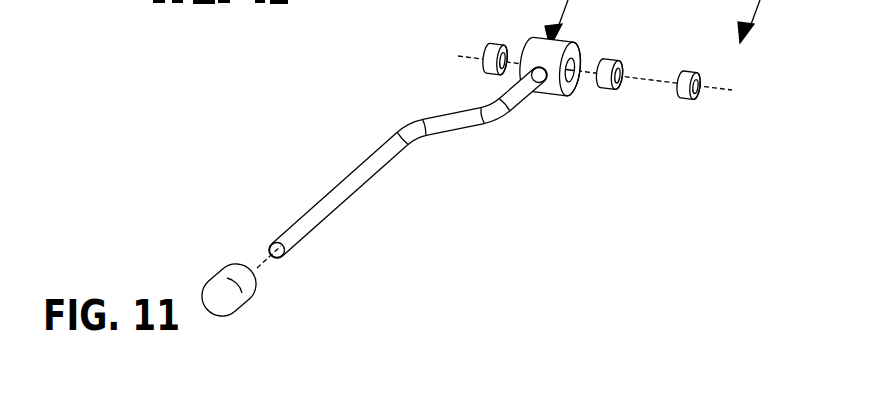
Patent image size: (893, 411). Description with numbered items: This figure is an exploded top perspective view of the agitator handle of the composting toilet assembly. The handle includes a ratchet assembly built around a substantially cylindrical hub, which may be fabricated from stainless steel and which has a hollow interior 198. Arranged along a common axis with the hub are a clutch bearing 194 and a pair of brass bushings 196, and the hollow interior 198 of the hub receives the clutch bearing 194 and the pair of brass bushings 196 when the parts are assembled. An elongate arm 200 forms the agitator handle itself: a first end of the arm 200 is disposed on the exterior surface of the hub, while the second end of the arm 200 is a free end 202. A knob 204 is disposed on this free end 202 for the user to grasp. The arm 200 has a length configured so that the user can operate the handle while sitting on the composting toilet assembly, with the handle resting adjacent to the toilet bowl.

The clutch bearing 194 is at (610, 62).
The brass bushings 196 is at (687, 68).
The hollow interior 198 is at (497, 45).
The arm 200 is at (390, 150).
The free end 202 is at (281, 234).
The knob 204 is at (215, 280).